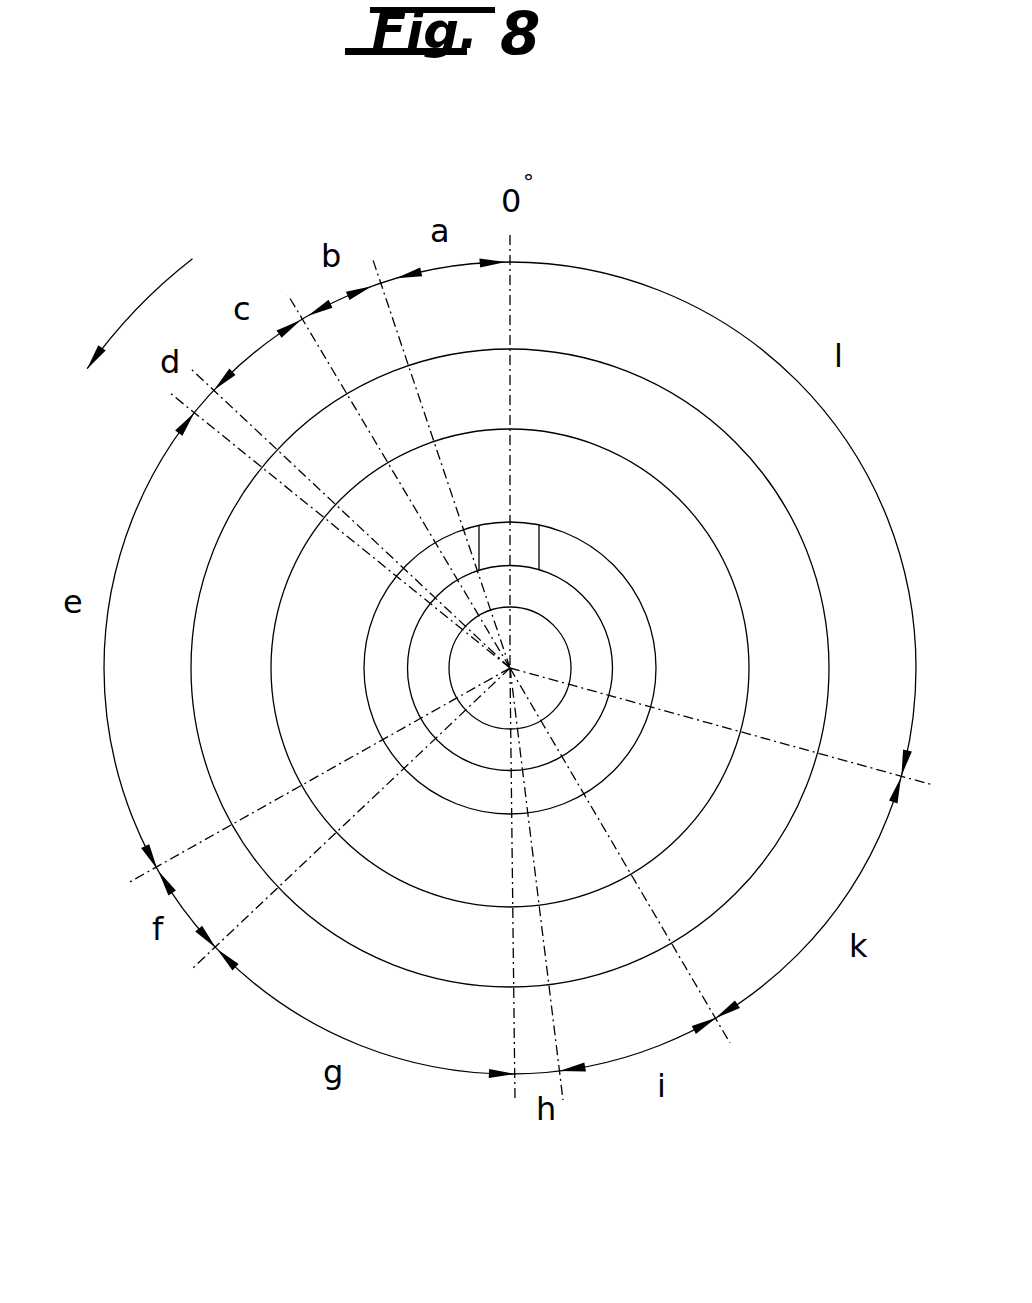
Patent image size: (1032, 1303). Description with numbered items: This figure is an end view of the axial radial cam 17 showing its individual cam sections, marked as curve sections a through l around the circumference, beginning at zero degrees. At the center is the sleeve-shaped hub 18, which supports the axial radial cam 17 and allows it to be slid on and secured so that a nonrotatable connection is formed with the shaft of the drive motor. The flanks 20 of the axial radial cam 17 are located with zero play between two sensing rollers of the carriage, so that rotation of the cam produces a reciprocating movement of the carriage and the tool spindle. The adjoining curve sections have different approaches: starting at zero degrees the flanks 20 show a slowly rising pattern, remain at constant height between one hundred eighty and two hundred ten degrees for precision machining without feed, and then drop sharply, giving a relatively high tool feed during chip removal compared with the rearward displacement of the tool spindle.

The axial radial cam 17 is at (333, 935).
The sleeve-shaped hub 18 is at (607, 498).
The flanks 20 is at (453, 933).